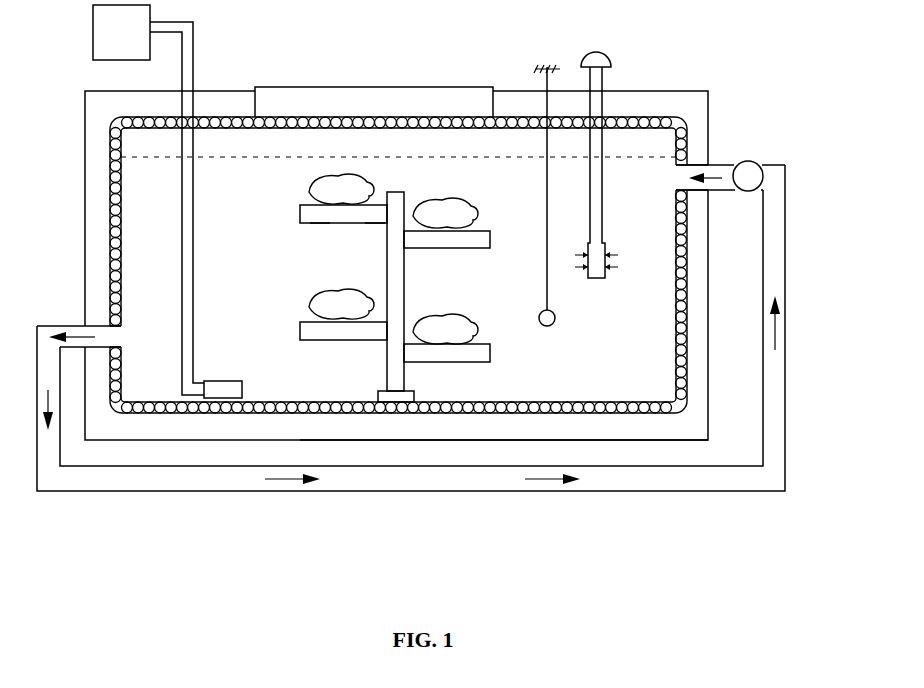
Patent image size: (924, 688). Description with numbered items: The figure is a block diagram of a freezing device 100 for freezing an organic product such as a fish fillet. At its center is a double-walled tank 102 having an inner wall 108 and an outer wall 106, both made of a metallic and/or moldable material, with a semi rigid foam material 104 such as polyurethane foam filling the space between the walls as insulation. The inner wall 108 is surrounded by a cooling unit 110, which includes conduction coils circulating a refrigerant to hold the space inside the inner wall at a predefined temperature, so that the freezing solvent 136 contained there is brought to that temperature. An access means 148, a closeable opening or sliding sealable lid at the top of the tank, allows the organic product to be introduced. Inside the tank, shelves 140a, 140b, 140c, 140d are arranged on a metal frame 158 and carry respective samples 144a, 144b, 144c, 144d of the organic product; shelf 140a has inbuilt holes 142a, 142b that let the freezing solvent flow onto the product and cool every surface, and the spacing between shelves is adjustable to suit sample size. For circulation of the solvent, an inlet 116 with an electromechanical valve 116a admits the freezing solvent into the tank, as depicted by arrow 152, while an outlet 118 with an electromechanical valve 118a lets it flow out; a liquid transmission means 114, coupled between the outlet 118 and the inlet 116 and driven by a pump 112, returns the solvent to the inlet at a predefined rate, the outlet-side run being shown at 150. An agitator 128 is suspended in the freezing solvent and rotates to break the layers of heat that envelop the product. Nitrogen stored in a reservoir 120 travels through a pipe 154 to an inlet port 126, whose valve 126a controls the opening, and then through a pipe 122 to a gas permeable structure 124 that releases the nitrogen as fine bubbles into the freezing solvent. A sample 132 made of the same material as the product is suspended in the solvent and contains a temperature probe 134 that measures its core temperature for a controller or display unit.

The freezing device 100 is at (552, 506).
The tank 102 is at (711, 432).
The semi rigid foam material 104 is at (696, 397).
The outer wall 106 is at (533, 440).
The inner wall 108 is at (599, 400).
The cooling unit 110 is at (688, 327).
The pump 112 is at (762, 165).
The liquid transmission means 114 is at (343, 466).
The inlet 116 is at (676, 179).
The electromechanical valve 116a is at (690, 168).
The outlet 118 is at (122, 334).
The electromechanical valve 118a is at (117, 345).
The reservoir 120 is at (94, 34).
The pipe 122 is at (195, 283).
The gas permeable structure 124 is at (245, 392).
The inlet port 126 is at (189, 128).
The valve 126a is at (187, 118).
The agitator 128 is at (607, 50).
The sample 132 is at (556, 324).
The temperature probe 134 is at (555, 316).
The freezing solvent 136 is at (423, 166).
The shelf 140a is at (300, 214).
The shelf 140b is at (491, 241).
The shelf 140c is at (300, 333).
The shelf 140d is at (491, 353).
The inbuilt hole 142a is at (320, 223).
The inbuilt hole 142b is at (374, 223).
The sample of organic product 144a is at (341, 189).
The sample of organic product 144b is at (445, 213).
The sample of organic product 144c is at (341, 304).
The sample of organic product 144d is at (445, 329).
The access means 148 is at (375, 85).
The outlet pipe 150 is at (82, 328).
The arrow 152 is at (717, 195).
The pipe 154 is at (195, 25).
The metal frame 158 is at (405, 283).